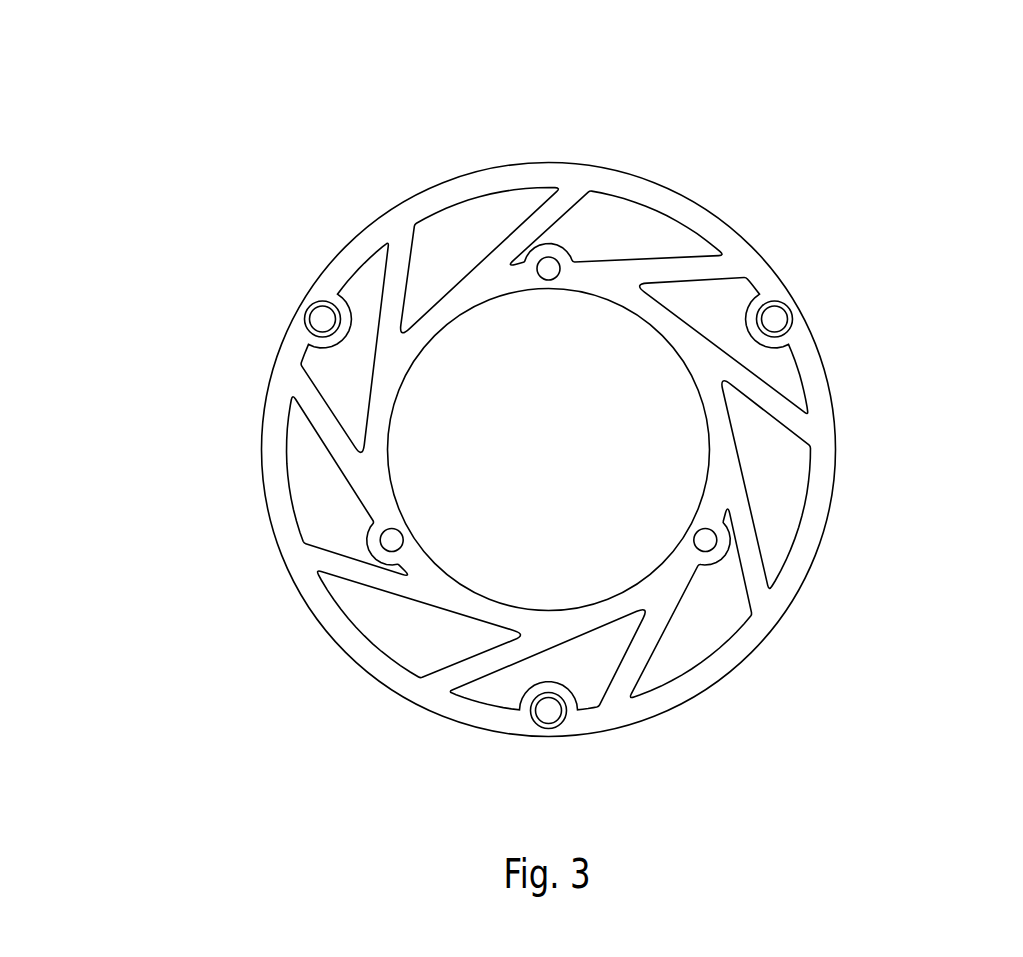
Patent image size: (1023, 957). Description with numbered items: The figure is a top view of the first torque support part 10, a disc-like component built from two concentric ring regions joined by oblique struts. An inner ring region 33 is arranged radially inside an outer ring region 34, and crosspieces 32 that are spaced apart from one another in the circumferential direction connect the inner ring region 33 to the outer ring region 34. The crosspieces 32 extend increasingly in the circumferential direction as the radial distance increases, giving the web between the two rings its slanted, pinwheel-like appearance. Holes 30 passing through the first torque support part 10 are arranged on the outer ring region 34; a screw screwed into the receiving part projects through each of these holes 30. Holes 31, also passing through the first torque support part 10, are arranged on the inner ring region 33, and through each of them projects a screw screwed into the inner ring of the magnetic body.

The first torque support part 10 is at (569, 380).
The holes 30 is at (775, 319).
The holes 31 is at (548, 268).
The crosspieces 32 is at (655, 258).
The inner ring region 33 is at (455, 293).
The outer ring region 34 is at (273, 395).